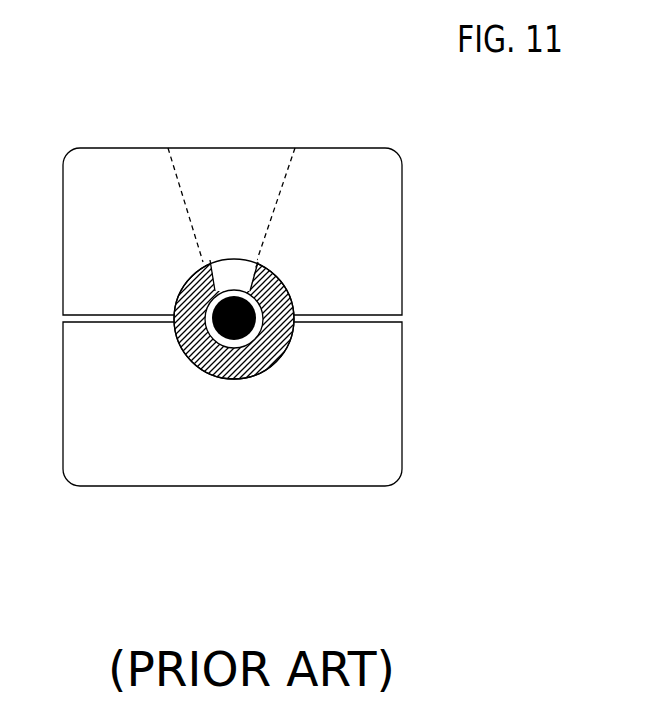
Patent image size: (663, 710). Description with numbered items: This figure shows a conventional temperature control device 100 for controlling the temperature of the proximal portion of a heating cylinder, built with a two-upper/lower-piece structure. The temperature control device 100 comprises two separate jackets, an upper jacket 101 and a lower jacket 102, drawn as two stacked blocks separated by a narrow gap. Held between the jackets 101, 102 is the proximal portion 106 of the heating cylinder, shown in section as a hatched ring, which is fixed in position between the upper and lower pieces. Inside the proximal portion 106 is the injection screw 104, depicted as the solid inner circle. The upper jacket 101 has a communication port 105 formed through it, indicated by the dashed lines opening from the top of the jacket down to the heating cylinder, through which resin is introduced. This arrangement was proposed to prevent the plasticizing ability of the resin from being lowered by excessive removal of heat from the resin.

The temperature control device 100 is at (291, 339).
The upper jacket 101 is at (334, 178).
The lower jacket 102 is at (342, 450).
The injection screw 104 is at (258, 317).
The communication port 105 is at (238, 180).
The proximal portion of the heating cylinder 106 is at (272, 288).